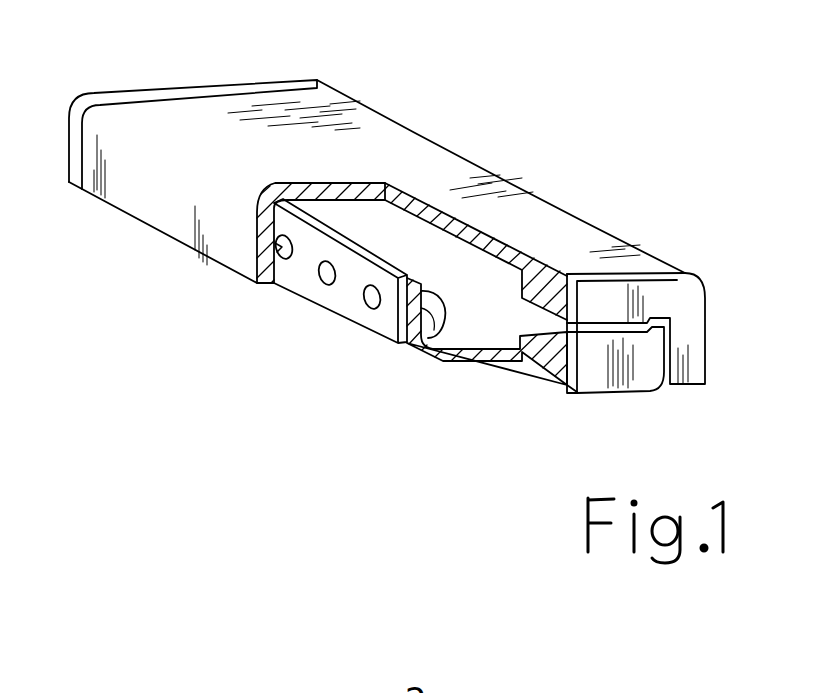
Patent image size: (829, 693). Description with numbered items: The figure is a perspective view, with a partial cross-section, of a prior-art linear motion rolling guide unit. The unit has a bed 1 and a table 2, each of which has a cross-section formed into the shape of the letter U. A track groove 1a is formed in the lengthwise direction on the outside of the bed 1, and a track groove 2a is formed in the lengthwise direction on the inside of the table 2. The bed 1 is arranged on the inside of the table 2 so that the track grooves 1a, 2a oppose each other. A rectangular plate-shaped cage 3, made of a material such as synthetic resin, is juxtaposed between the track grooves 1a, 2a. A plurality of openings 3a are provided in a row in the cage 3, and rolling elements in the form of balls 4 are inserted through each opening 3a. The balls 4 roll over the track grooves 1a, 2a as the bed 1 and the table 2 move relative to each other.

The bed 1 is at (497, 357).
The track groove 1a is at (418, 315).
The table 2 is at (362, 140).
The track groove 2a is at (285, 254).
The cage 3 is at (376, 333).
The opening 3a is at (366, 304).
The ball 4 is at (322, 280).